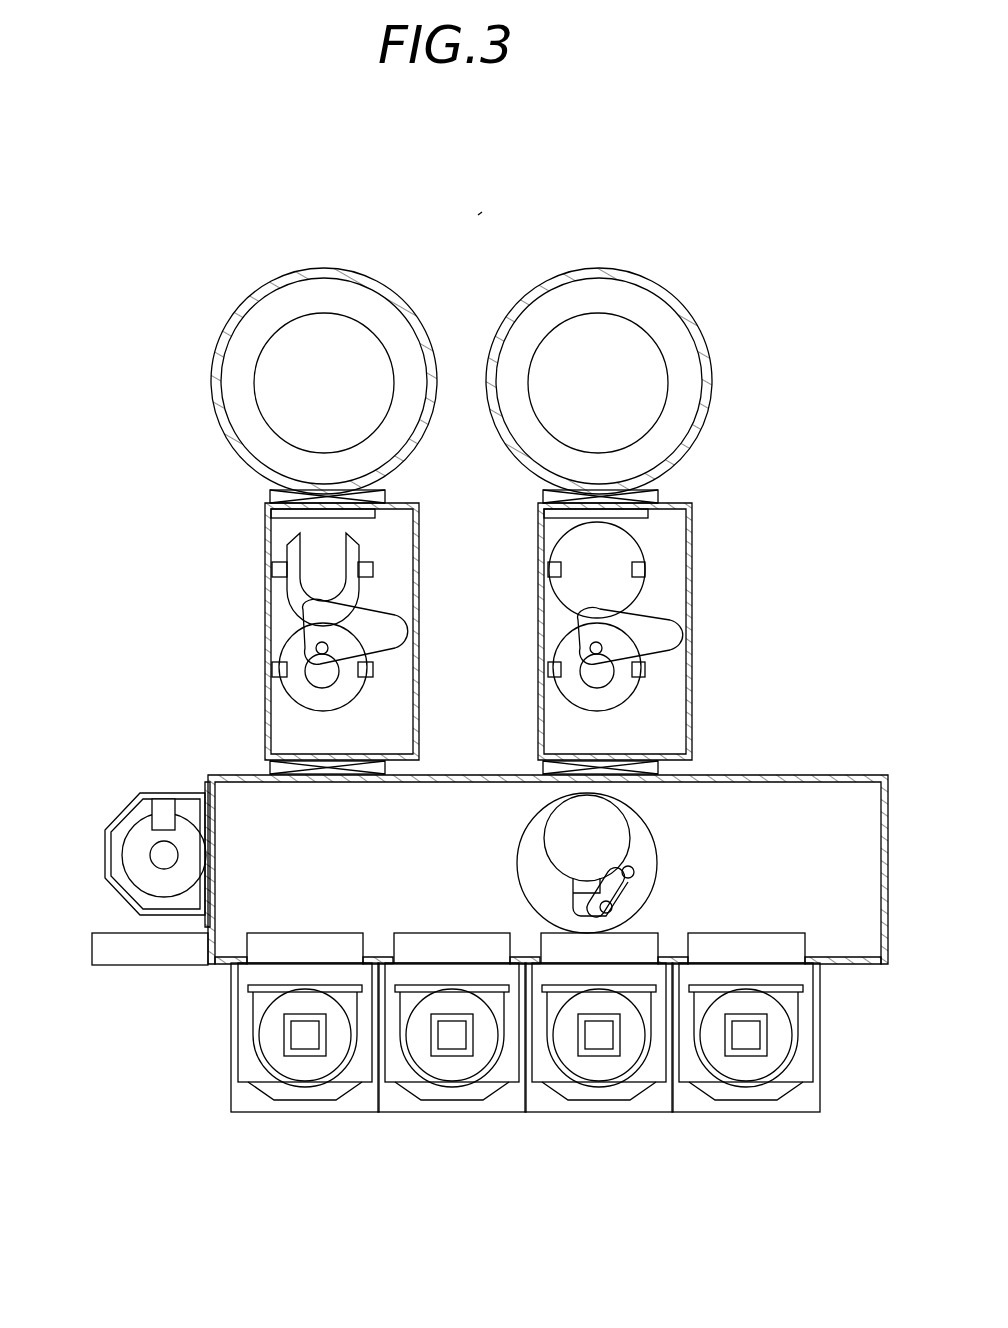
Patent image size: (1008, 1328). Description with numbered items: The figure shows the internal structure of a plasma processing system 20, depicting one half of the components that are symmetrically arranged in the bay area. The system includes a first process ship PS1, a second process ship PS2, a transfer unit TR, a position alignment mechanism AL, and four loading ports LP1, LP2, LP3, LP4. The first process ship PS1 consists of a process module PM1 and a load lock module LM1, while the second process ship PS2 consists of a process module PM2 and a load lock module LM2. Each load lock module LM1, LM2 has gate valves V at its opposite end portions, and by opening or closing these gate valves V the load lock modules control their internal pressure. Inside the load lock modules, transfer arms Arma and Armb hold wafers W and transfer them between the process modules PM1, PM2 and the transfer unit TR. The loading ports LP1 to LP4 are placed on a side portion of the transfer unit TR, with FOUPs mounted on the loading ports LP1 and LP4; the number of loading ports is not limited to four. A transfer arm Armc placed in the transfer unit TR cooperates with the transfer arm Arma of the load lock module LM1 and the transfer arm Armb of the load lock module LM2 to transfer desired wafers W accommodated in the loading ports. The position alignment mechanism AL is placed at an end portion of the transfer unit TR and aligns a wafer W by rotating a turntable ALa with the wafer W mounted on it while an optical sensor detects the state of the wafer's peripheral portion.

The plasma processing system 20 is at (478, 215).
The process module PM1 is at (228, 318).
The process module PM2 is at (697, 318).
The first process ship PS1 is at (168, 462).
The second process ship PS2 is at (794, 457).
The gate valve V is at (268, 498).
The load lock module LM1 is at (268, 545).
The load lock module LM2 is at (692, 555).
The wafer W is at (552, 542).
The transfer arm Arma is at (290, 628).
The transfer arm Armb is at (680, 634).
The transfer arm Armc is at (632, 887).
The position alignment mechanism AL is at (132, 808).
The turntable ALa is at (120, 850).
The transfer unit TR is at (835, 775).
The loading port LP1 is at (306, 1113).
The loading port LP2 is at (453, 1113).
The loading port LP3 is at (601, 1113).
The loading port LP4 is at (749, 1113).